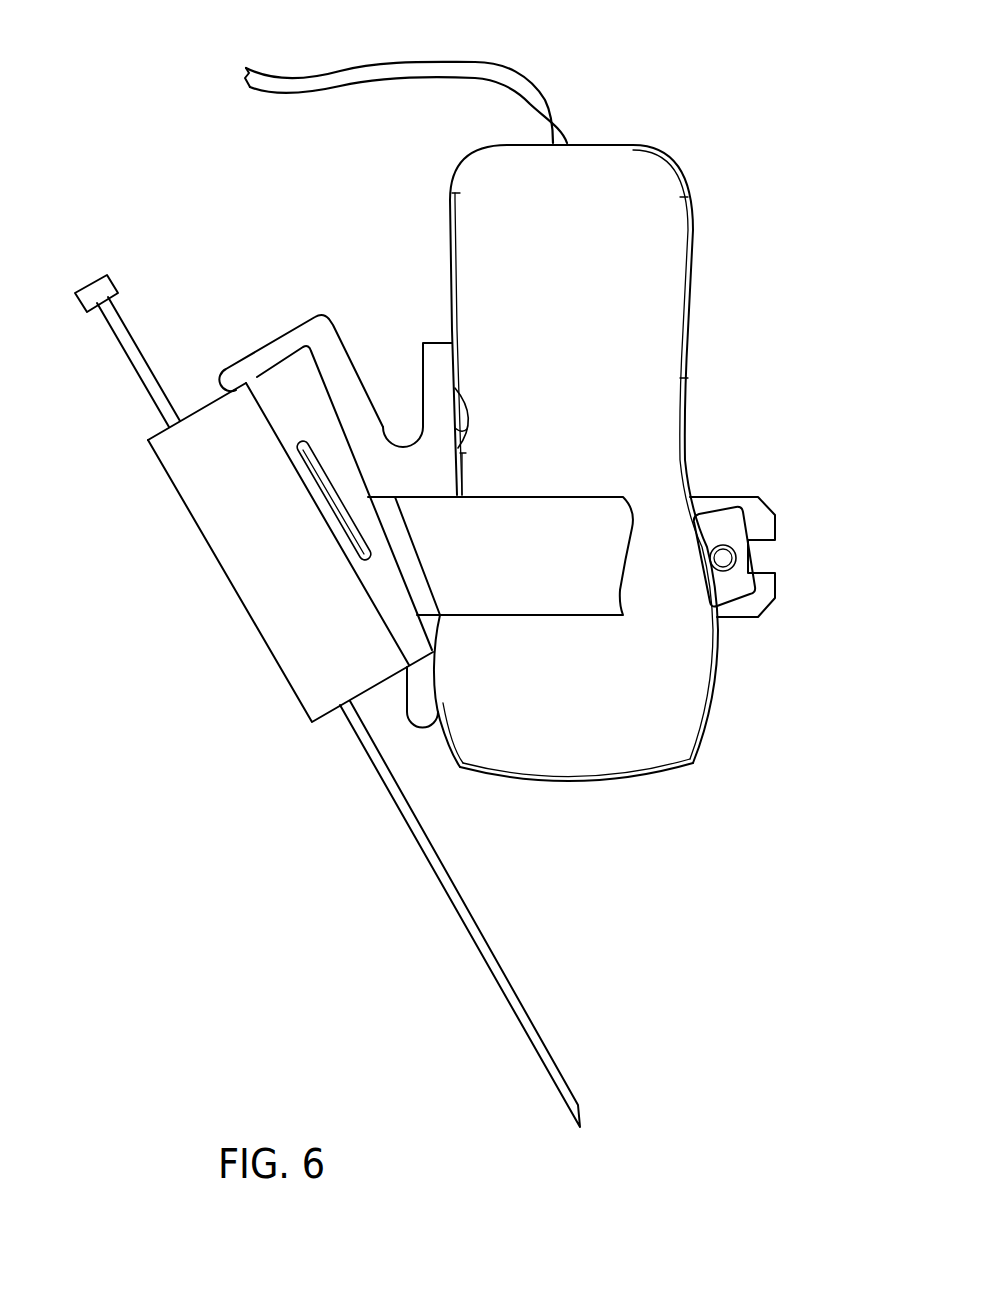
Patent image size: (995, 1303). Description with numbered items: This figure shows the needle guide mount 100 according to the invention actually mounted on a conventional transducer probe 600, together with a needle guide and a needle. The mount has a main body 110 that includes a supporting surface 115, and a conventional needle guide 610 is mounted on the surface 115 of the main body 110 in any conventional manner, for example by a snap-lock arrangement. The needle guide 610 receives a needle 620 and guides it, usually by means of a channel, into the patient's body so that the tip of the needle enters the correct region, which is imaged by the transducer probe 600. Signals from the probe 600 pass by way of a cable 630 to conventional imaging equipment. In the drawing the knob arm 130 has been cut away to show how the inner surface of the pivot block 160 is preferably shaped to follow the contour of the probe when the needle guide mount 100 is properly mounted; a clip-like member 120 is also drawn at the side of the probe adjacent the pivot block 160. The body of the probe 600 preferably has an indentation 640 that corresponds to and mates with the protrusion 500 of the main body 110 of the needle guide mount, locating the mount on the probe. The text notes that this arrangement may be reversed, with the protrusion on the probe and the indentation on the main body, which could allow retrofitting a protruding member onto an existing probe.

The needle guide mount 100 is at (400, 416).
The main body 110 is at (265, 334).
The supporting surface 115 is at (267, 422).
The mounting clip 120 is at (763, 503).
The knob arm 130 is at (503, 597).
The pivot block 160 is at (756, 557).
The protrusion 500 is at (472, 410).
The transducer probe 600 is at (688, 380).
The needle guide 610 is at (272, 662).
The needle 620 is at (425, 878).
The cable 630 is at (530, 72).
The indentation 640 is at (465, 430).